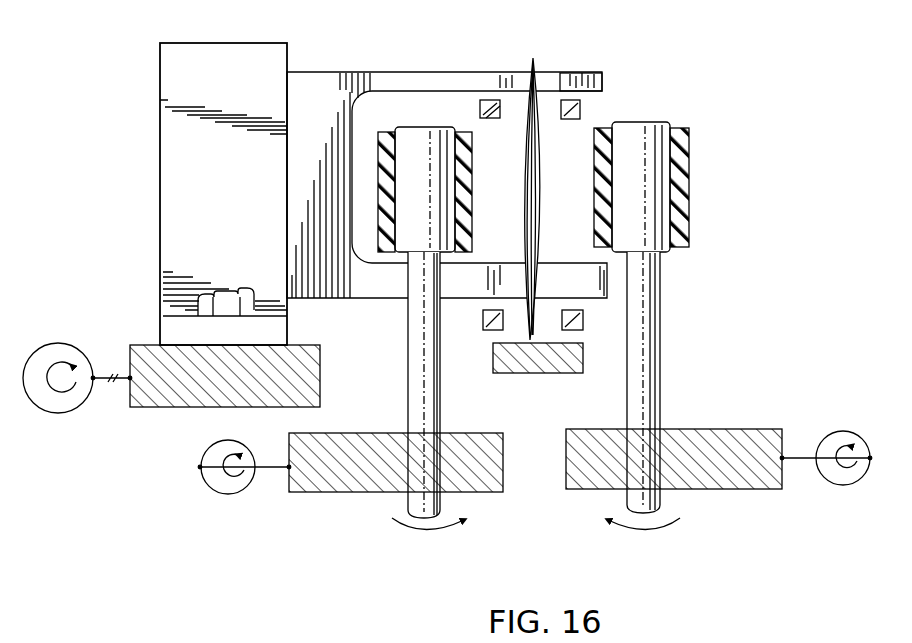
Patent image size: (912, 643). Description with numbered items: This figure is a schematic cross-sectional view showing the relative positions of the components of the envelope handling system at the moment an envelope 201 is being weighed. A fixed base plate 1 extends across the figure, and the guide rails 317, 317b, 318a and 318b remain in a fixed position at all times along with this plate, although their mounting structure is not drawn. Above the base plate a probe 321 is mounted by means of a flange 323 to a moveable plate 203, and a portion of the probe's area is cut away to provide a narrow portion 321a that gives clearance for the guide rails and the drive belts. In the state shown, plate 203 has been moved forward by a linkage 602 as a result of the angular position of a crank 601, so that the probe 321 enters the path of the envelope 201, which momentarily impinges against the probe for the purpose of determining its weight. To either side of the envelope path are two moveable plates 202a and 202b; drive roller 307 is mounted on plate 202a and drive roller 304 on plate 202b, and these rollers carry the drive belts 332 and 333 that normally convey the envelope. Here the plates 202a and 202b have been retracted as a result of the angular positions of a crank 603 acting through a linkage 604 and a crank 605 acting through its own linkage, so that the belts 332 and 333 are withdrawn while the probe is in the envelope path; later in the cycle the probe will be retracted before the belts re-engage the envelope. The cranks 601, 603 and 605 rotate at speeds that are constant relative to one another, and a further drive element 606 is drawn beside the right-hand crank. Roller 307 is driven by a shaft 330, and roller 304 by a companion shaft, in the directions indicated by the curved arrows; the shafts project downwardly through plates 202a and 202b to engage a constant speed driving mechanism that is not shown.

The fixed base plate 1 is at (593, 388).
The envelope 201 is at (536, 62).
The moveable plate 202a is at (490, 487).
The moveable plate 202b is at (772, 483).
The moveable plate 203 is at (316, 364).
The drive roller 304 is at (664, 128).
The drive roller 307 is at (452, 108).
The guide rail 317 is at (491, 98).
The guide rail 317b is at (485, 330).
The guide rail 318a is at (579, 110).
The guide rail 318b is at (583, 328).
The probe 321 is at (312, 102).
The narrow portion 321a is at (596, 72).
The flange 323 is at (171, 331).
The shaft 330 is at (419, 390).
The drive belt 332 is at (510, 207).
The drive belt 333 is at (688, 211).
The crank 601 is at (82, 412).
The linkage 602 is at (127, 386).
The crank 603 is at (228, 494).
The linkage 604 is at (278, 472).
The crank 605 is at (846, 434).
The motor 606 is at (838, 410).